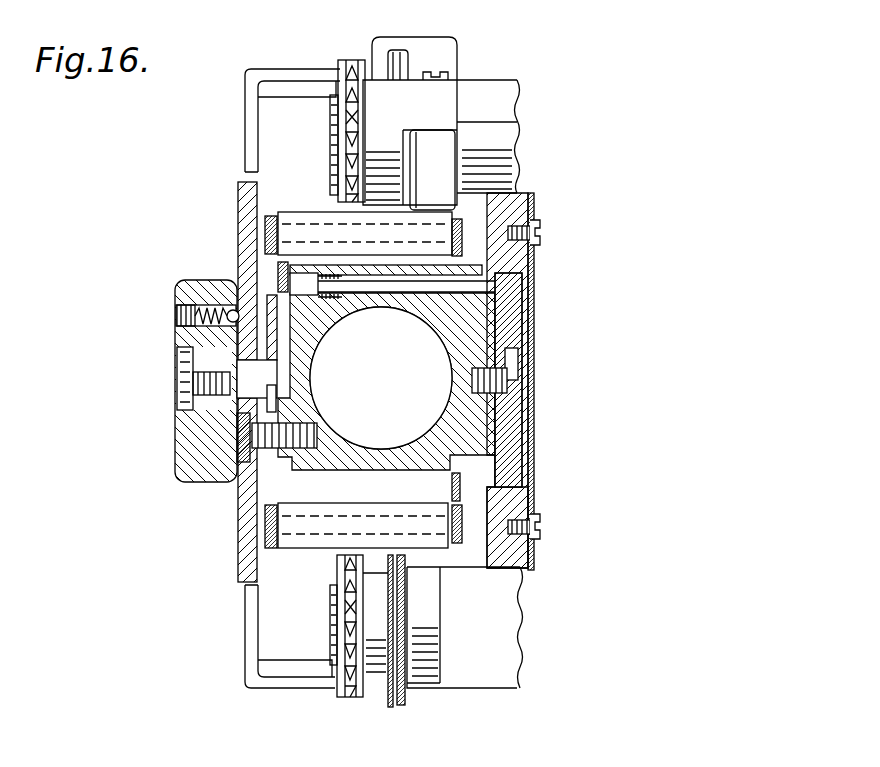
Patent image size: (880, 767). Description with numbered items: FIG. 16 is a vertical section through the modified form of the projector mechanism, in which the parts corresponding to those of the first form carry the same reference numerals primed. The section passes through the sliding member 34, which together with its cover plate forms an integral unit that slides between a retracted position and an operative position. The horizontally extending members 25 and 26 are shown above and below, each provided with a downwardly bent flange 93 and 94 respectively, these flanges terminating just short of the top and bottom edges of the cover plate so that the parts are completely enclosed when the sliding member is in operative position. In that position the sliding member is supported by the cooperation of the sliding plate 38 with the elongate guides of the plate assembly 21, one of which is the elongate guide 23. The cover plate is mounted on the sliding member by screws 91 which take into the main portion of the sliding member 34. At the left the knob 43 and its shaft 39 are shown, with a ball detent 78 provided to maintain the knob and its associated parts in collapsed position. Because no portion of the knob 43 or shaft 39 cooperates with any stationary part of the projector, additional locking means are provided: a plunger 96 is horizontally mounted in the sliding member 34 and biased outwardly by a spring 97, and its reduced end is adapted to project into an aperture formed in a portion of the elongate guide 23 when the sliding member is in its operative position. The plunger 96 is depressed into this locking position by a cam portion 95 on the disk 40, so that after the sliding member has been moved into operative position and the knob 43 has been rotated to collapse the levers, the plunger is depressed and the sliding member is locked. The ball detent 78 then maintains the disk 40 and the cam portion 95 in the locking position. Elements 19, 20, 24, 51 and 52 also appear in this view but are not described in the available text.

The upper rack 19 is at (352, 60).
The lower rack 20 is at (358, 697).
The plate assembly 21 is at (546, 276).
The elongate guide 23 is at (495, 214).
The lower frame block 24 is at (488, 554).
The horizontally extending member 25 is at (303, 93).
The horizontally extending member 26 is at (287, 668).
The sliding member 34 is at (442, 315).
The sliding plate 38 is at (512, 317).
The shaft 39 is at (266, 386).
The disk 40 is at (267, 293).
The knob 43 is at (180, 448).
The upper roller 51 is at (297, 214).
The lower roller 52 is at (302, 550).
The ball detent 78 is at (236, 311).
The screws 91 is at (238, 452).
The downwardly bent flange 93 is at (312, 76).
The downwardly bent flange 94 is at (292, 692).
The cam portion 95 is at (278, 271).
The plunger 96 is at (450, 283).
The spring 97 is at (327, 275).